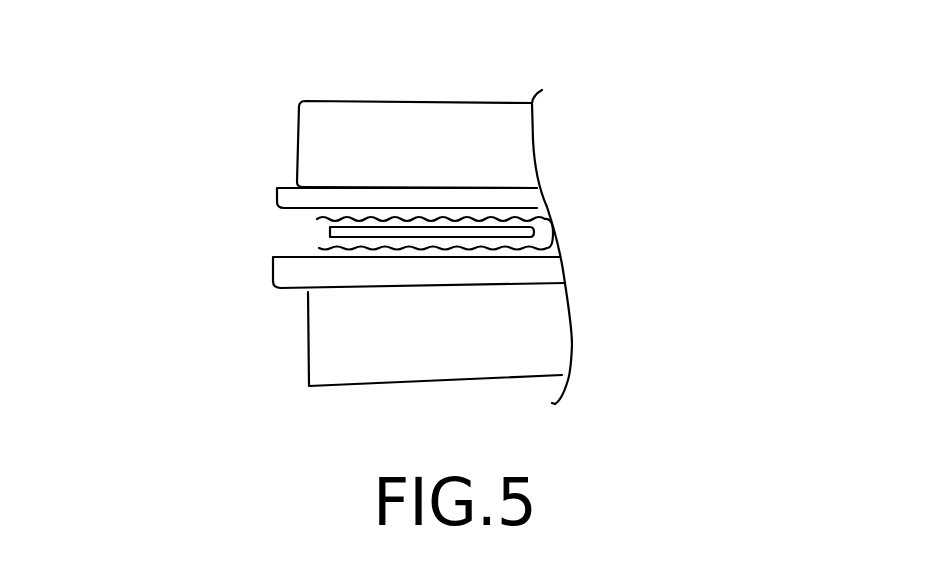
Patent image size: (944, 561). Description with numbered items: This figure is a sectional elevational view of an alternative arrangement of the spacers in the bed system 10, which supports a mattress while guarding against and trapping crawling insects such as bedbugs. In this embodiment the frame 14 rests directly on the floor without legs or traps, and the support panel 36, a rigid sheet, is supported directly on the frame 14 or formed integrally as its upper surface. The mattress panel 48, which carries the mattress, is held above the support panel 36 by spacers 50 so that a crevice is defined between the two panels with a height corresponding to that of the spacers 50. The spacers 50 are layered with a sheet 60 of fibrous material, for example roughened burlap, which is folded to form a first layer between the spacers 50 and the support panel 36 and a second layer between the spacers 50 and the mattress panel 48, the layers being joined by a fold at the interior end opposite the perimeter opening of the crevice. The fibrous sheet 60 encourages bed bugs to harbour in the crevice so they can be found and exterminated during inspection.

The bed system 10 is at (117, 224).
The frame 14 is at (304, 344).
The support panel 36 is at (273, 270).
The mattress panel 48 is at (276, 203).
The spacers 50 is at (327, 231).
The sheet 60 is at (435, 220).